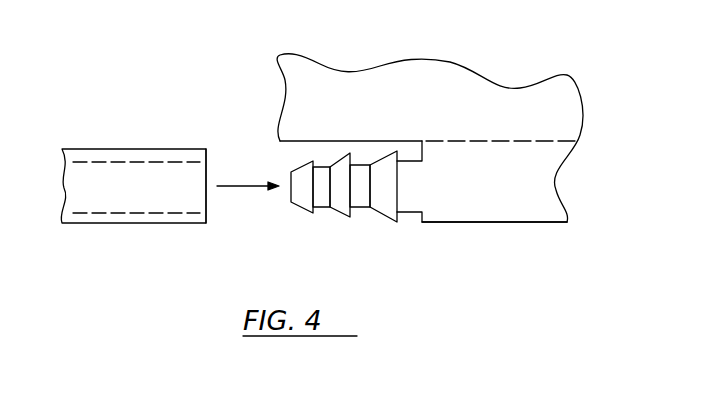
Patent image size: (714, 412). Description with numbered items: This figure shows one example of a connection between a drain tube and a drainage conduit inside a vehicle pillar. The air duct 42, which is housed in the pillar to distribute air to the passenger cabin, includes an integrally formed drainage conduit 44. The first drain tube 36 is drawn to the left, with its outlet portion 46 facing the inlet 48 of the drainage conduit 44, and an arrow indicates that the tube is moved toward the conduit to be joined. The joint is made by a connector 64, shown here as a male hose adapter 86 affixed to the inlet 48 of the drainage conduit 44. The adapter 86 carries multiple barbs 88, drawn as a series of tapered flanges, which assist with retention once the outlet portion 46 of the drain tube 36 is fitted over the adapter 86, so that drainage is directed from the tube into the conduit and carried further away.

The first drain tube 36 is at (95, 149).
The outlet portion 46 is at (183, 149).
The air duct 42 is at (515, 109).
The drainage conduit 44 is at (533, 222).
The inlet 48 is at (478, 222).
The connector 64 is at (317, 153).
The male hose adapter 86 is at (361, 210).
The barbs 88 is at (313, 158).